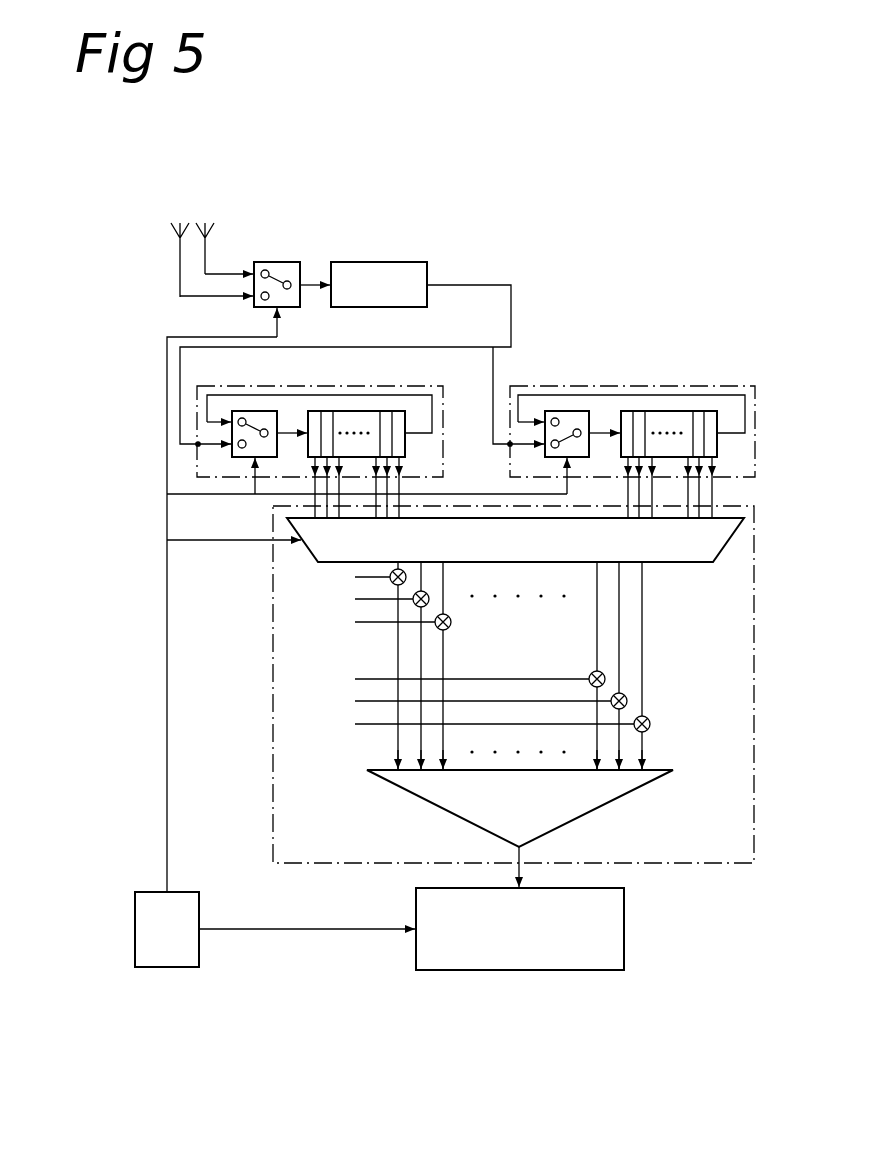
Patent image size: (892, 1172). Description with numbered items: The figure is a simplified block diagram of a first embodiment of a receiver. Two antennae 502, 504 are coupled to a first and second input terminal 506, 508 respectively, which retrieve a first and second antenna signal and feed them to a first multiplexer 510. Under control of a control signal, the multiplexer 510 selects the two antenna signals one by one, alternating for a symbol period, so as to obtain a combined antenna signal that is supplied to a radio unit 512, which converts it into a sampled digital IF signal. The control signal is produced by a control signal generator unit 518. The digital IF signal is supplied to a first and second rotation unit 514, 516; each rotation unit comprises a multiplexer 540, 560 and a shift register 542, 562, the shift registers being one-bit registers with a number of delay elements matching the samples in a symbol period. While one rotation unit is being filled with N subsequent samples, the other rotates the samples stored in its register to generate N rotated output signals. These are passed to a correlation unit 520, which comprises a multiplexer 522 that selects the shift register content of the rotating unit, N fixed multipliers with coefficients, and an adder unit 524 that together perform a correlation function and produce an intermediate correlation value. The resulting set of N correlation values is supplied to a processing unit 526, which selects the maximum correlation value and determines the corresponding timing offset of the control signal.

The antenna 502 is at (210, 234).
The antenna 504 is at (180, 252).
The first input terminal 506 is at (228, 274).
The second input terminal 508 is at (227, 295).
The first multiplexer 510 is at (295, 268).
The radio unit 512 is at (400, 278).
The first rotation unit 514 is at (331, 423).
The second rotation unit 516 is at (637, 413).
The control signal generator unit 518 is at (187, 908).
The correlation unit 520 is at (492, 684).
The multiplexer 522 is at (688, 550).
The adder unit 524 is at (605, 794).
The processing unit 526 is at (620, 920).
The multiplexer 540 is at (265, 414).
The shift register 542 is at (418, 372).
The multiplexer 560 is at (572, 414).
The shift register 562 is at (652, 414).